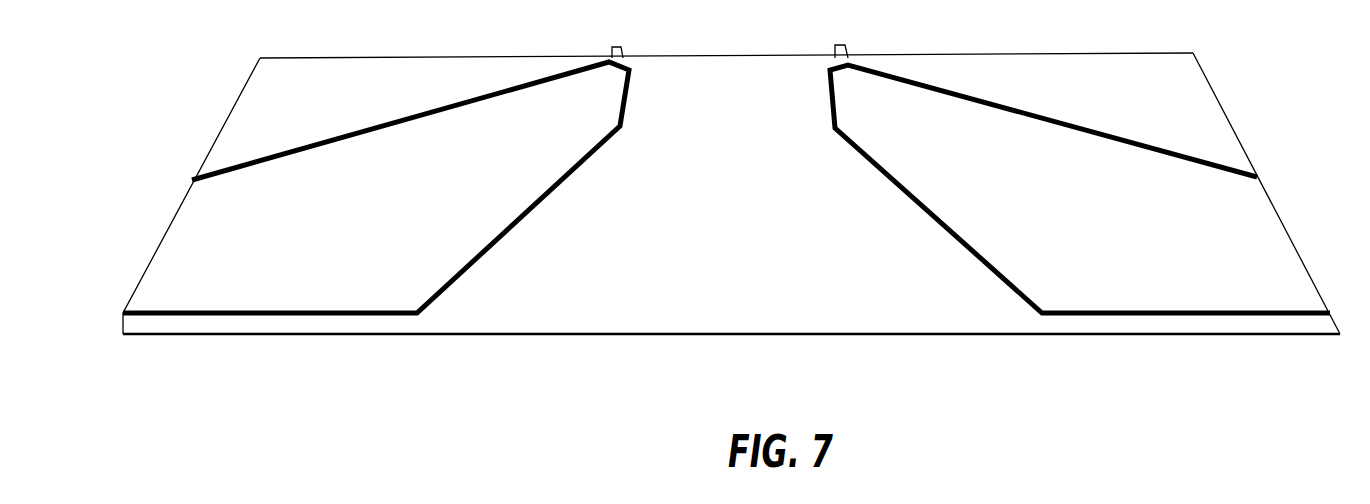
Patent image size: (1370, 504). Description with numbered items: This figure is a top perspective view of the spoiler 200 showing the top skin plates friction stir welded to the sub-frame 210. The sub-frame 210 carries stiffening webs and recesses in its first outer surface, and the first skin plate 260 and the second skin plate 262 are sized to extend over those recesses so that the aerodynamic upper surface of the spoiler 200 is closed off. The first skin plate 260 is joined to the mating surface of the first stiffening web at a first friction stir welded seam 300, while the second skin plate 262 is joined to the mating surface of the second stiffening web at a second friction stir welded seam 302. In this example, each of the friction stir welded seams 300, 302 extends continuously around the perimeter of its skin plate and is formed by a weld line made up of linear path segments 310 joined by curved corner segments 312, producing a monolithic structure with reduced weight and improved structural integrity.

The spoiler 200 is at (1119, 46).
The sub-frame 210 is at (677, 306).
The first skin plate 260 is at (201, 232).
The second skin plate 262 is at (1236, 212).
The first friction stir welded seam 300 is at (431, 112).
The second friction stir welded seam 302 is at (1222, 163).
The linear path segments 310 is at (235, 163).
The curved corner segments 312 is at (611, 57).